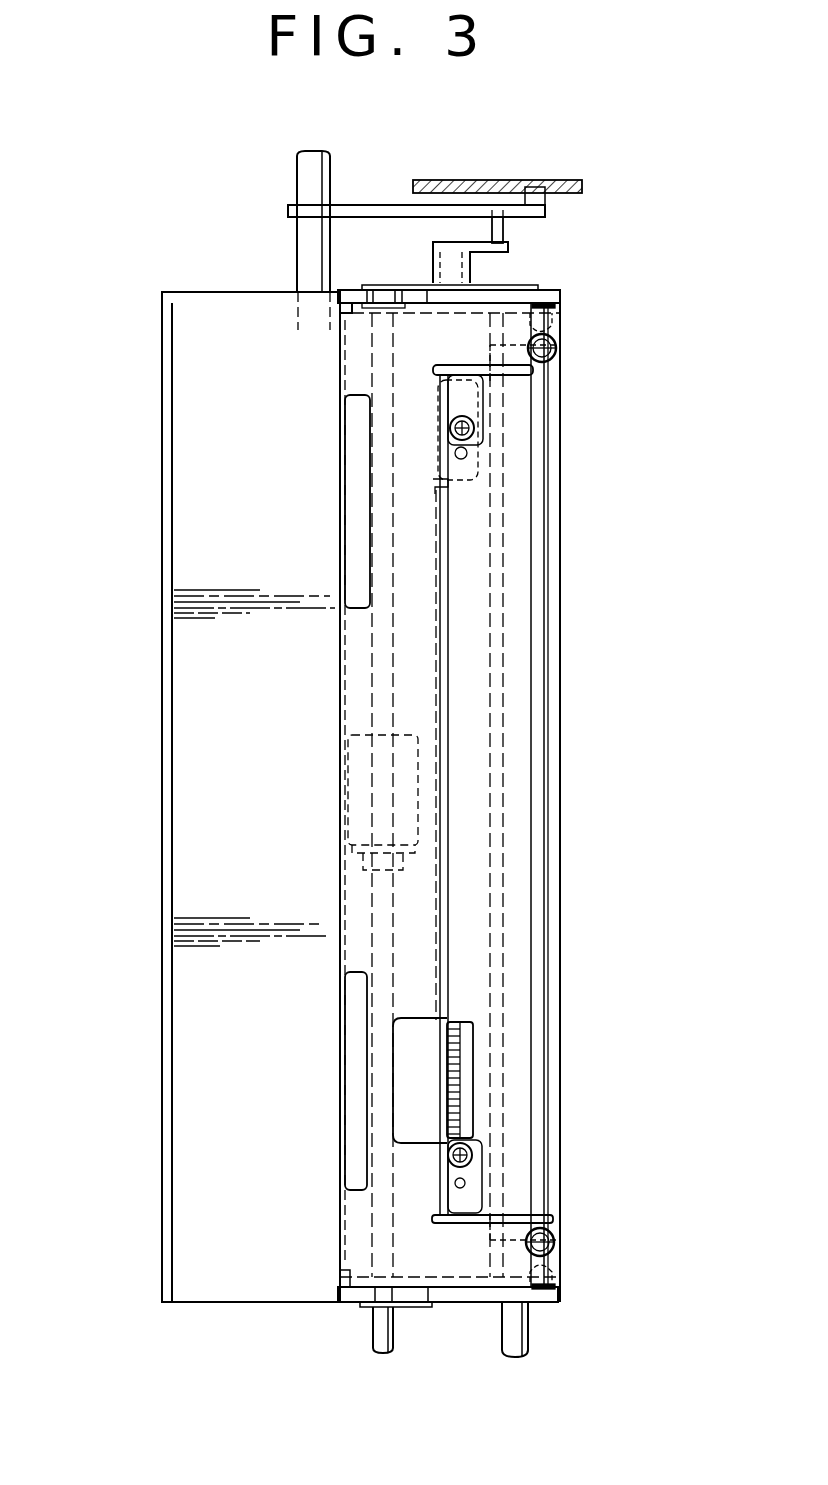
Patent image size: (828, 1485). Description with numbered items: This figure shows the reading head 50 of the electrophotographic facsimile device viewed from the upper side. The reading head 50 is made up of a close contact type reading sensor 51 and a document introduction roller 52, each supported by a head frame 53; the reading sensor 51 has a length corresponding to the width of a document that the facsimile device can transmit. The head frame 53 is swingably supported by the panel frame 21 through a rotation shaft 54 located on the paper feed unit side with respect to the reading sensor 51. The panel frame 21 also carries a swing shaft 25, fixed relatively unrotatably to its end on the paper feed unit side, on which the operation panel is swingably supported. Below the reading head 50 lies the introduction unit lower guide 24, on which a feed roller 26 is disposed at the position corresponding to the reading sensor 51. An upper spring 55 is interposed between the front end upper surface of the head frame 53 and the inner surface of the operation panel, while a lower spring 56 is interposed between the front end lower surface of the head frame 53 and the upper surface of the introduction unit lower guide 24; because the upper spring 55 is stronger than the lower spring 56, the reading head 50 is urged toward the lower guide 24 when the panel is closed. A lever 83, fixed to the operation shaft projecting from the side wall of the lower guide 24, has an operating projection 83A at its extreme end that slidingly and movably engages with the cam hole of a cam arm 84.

The panel frame 21 is at (495, 180).
The introduction unit lower guide 24 is at (185, 645).
The swing shaft 25 is at (297, 170).
The feed roller 26 is at (487, 1235).
The reading head 50 is at (330, 378).
The reading sensor 51 is at (447, 1095).
The document introduction roller 52 is at (345, 790).
The head frame 53 is at (345, 1010).
The rotation shaft 54 is at (373, 1335).
The upper spring 55 is at (558, 351).
The lower spring 56 is at (560, 328).
The lever 83 is at (510, 245).
The operating projection 83A is at (505, 230).
The cam arm 84 is at (393, 205).